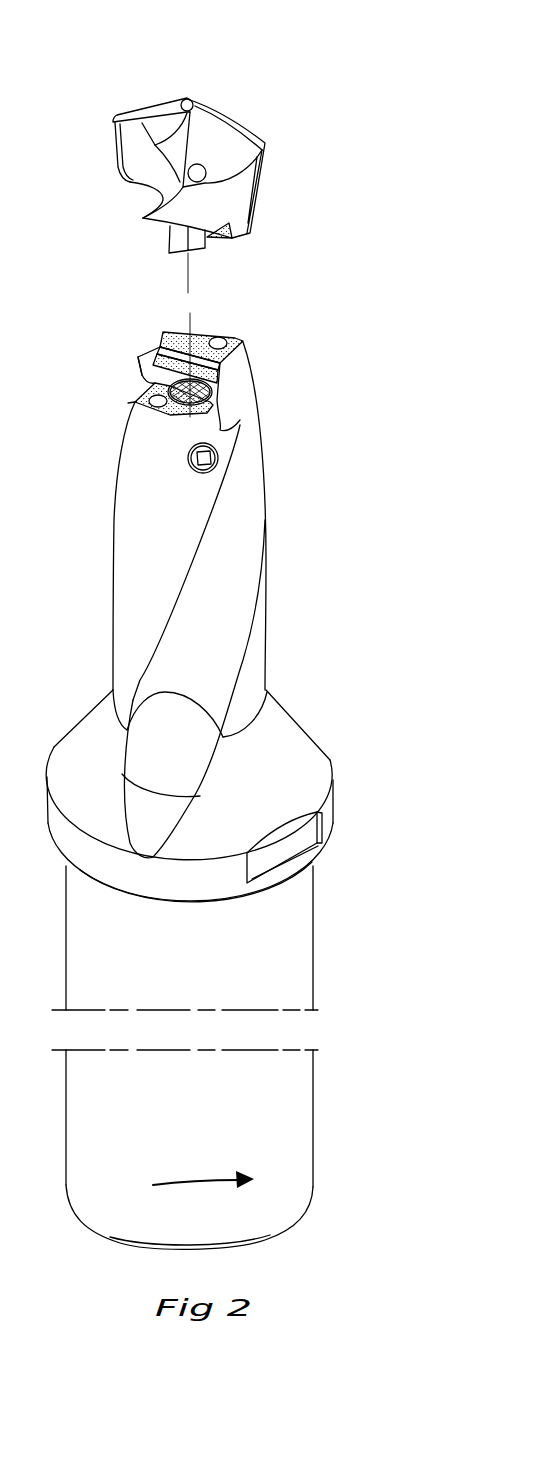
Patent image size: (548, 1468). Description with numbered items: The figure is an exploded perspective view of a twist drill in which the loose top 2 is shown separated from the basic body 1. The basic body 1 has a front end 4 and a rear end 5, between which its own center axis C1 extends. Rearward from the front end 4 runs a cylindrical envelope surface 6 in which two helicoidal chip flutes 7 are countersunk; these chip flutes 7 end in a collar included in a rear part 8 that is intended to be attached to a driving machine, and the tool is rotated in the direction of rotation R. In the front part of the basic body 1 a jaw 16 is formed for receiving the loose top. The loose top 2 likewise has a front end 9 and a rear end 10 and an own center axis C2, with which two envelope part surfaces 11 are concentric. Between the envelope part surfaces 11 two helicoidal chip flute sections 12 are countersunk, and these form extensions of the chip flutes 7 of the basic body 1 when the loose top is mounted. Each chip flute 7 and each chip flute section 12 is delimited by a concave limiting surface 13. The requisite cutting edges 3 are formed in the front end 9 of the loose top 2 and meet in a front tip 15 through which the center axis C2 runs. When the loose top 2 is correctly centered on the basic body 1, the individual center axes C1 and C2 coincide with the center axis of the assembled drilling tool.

The basic body 1 is at (70, 684).
The loose top 2 is at (286, 186).
The cutting edges 3 is at (248, 135).
The front end 4 is at (133, 352).
The rear end 5 is at (87, 1227).
The cylindrical envelope surface 6 is at (160, 575).
The chip flutes 7 is at (245, 528).
The rear part 8 is at (77, 906).
The front end 9 is at (155, 93).
The rear end 10 is at (240, 247).
The envelope part surfaces 11 is at (236, 215).
The chip flute sections 12 is at (138, 197).
The concave surfaces 13 is at (242, 609).
The front tip 15 is at (185, 110).
The jaw 16 is at (150, 345).
The center axis C1 is at (191, 322).
The center axis C2 is at (188, 268).
The direction of rotation R is at (203, 1174).